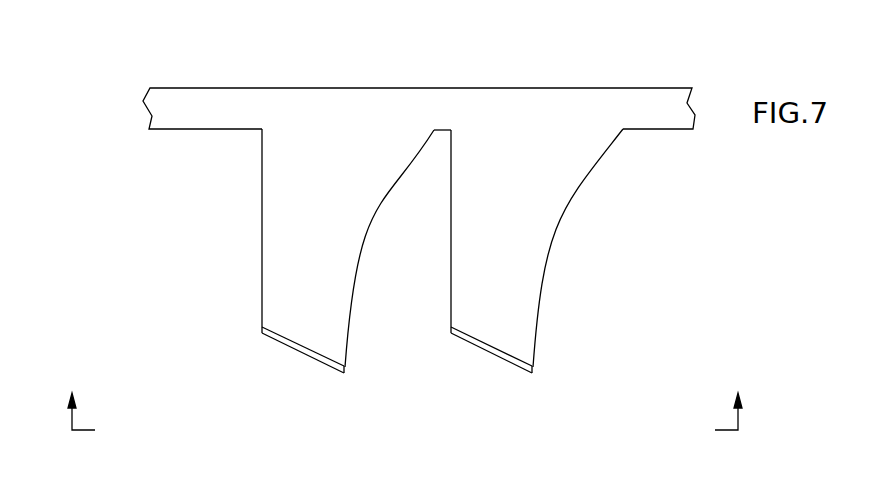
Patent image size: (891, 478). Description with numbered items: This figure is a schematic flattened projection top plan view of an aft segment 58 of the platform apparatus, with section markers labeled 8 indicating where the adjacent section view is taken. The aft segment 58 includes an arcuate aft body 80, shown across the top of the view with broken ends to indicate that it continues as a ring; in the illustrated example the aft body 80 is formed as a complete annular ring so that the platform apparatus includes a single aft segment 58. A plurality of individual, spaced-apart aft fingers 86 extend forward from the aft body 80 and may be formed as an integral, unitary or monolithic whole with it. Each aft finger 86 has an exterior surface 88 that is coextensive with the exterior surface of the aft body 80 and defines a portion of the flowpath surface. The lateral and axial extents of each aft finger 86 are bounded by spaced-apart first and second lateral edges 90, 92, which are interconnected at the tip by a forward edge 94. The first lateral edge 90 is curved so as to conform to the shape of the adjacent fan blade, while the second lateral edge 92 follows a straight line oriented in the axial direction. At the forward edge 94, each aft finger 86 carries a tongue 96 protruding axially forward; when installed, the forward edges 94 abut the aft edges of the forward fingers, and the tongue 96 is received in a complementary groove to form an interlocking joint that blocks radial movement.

The aft segment 58 is at (538, 67).
The arcuate aft body 80 is at (657, 89).
The second lateral edge 92 is at (262, 258).
The exterior surface 88 is at (332, 241).
The first lateral edge 90 is at (352, 297).
The aft finger 86 is at (308, 333).
The forward edge 94 is at (277, 343).
The tongue 96 is at (325, 362).
The section line 8- 8 is at (404, 398).